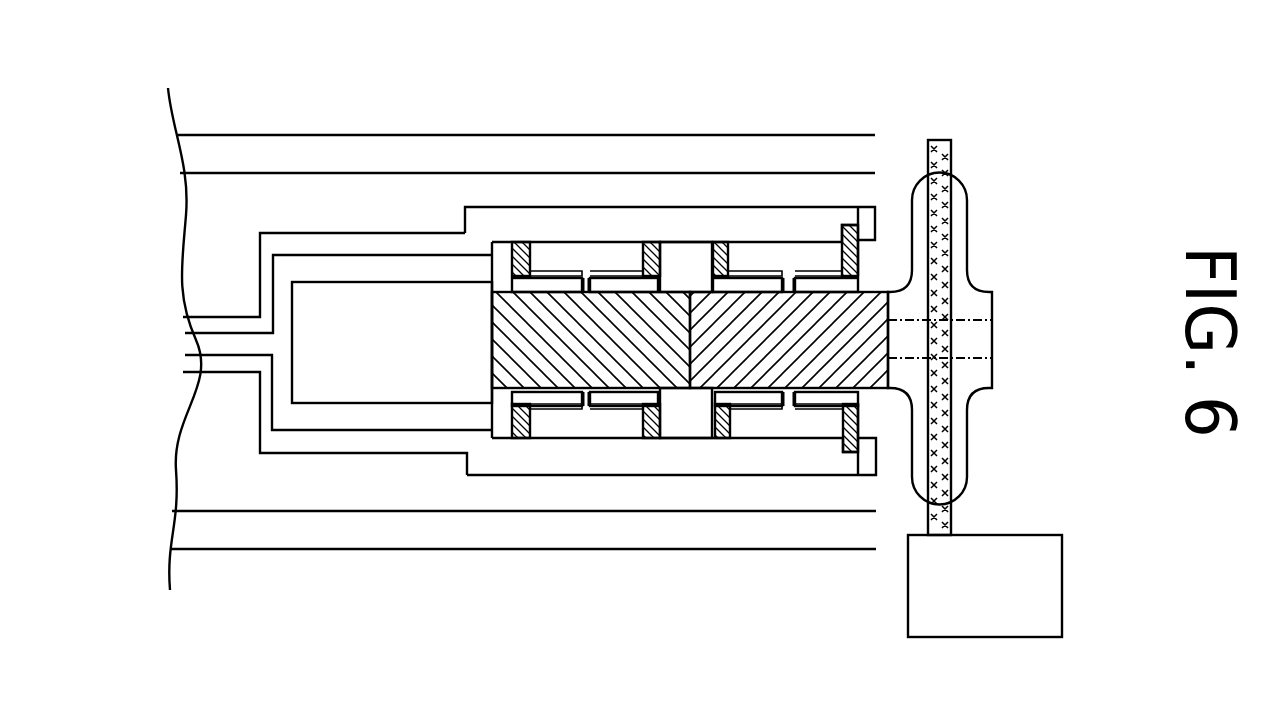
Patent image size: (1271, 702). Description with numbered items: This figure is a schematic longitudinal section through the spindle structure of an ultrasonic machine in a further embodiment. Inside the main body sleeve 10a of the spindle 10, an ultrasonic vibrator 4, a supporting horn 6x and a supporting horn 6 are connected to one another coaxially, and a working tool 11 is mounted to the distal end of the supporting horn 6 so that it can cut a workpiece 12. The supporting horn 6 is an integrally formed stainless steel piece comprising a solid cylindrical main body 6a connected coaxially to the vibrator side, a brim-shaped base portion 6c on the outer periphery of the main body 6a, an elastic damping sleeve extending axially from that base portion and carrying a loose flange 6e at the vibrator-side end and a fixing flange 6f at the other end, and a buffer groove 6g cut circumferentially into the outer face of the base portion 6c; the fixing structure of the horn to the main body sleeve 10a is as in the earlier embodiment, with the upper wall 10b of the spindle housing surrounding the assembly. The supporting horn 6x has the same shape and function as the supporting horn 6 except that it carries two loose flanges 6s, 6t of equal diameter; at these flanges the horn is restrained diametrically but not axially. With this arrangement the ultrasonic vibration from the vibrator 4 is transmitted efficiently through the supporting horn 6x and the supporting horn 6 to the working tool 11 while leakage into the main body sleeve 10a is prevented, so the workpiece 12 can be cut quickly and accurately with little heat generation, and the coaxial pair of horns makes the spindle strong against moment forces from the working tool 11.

The ultrasonic vibrator 4 is at (327, 377).
The spindle 10 is at (373, 458).
The main body sleeve 10a is at (563, 462).
The housing upper wall 10b is at (500, 243).
The supporting horn 6 is at (691, 416).
The main body 6a is at (700, 290).
The base portion 6c is at (818, 287).
The loose flange 6e is at (720, 438).
The fixing flange 6f is at (857, 447).
The buffer groove 6g is at (787, 406).
The loose flange 6s is at (523, 438).
The loose flange 6t is at (653, 438).
The supporting horn 6x is at (499, 418).
The working tool 11 is at (950, 155).
The workpiece 12 is at (1047, 592).